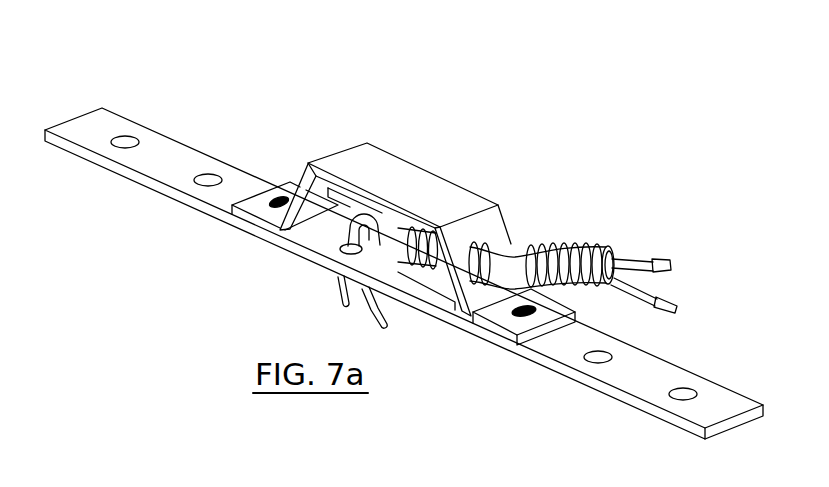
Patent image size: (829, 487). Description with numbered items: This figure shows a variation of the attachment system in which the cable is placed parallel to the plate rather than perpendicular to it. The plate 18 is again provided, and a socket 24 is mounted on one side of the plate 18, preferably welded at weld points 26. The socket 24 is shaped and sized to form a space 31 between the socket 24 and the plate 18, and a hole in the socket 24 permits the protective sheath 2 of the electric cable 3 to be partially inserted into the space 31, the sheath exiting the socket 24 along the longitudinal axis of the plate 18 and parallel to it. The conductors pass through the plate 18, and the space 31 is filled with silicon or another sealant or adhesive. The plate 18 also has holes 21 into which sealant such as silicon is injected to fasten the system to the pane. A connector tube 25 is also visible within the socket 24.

The protective sheath 2 is at (587, 241).
The electric cable 3 is at (645, 256).
The plate 18 is at (193, 147).
The holes 21 is at (128, 134).
The socket 24 is at (400, 156).
The connector tube 25 is at (386, 264).
The weld points 26 is at (268, 208).
The space 31 is at (314, 205).